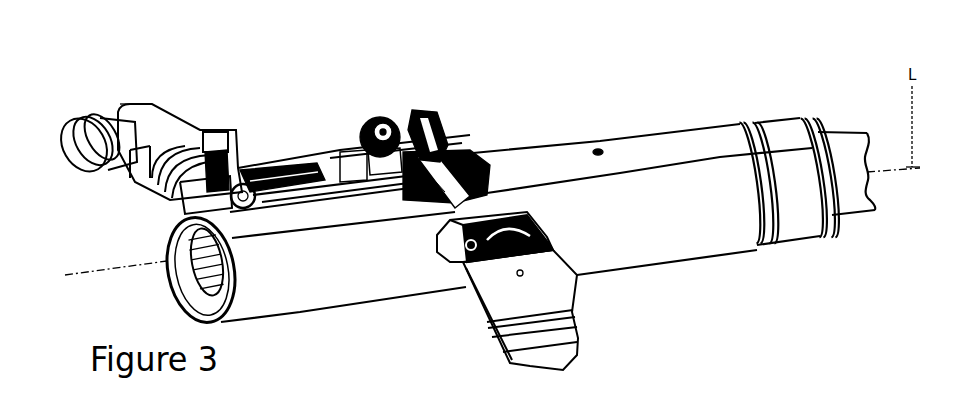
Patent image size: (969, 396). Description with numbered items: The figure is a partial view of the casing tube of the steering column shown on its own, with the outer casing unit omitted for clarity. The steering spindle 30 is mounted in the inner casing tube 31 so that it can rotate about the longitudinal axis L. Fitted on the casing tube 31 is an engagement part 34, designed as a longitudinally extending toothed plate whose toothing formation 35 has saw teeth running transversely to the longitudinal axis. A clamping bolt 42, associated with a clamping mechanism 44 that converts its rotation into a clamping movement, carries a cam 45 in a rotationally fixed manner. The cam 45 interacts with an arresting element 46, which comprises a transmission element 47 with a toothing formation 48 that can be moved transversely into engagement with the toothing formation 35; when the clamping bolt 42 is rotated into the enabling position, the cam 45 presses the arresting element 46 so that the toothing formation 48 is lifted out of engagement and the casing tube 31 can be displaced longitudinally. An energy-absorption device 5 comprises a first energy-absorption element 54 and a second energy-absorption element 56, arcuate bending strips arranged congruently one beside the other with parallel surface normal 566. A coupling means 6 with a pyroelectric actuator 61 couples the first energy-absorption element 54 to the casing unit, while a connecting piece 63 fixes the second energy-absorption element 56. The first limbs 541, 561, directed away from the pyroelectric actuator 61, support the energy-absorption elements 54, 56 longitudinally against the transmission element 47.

The energy-absorption device 5 is at (238, 88).
The coupling means 6 is at (164, 54).
The steering spindle 30 is at (837, 147).
The casing tube 31 is at (675, 240).
The engagement part 34 is at (345, 213).
The toothing formation 35 is at (450, 150).
The clamping bolt 42 is at (472, 152).
The clamping mechanism 44 is at (507, 213).
The cam 45 is at (422, 110).
The arresting element 46 is at (390, 110).
The transmission element 47 is at (388, 208).
The toothing formation 48 is at (392, 203).
The first energy-absorption element 54 is at (163, 187).
The second energy-absorption element 56 is at (170, 221).
The pyroelectric actuator 61 is at (135, 118).
The connecting piece 63 is at (222, 150).
The first limb 541 is at (287, 168).
The first limb 561 is at (298, 217).
The surface normal 566 is at (132, 100).